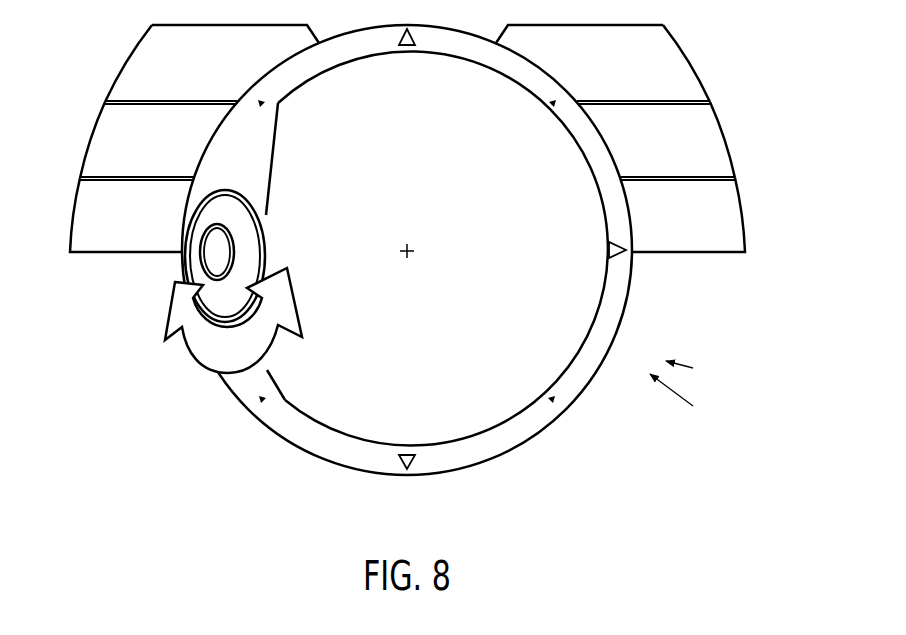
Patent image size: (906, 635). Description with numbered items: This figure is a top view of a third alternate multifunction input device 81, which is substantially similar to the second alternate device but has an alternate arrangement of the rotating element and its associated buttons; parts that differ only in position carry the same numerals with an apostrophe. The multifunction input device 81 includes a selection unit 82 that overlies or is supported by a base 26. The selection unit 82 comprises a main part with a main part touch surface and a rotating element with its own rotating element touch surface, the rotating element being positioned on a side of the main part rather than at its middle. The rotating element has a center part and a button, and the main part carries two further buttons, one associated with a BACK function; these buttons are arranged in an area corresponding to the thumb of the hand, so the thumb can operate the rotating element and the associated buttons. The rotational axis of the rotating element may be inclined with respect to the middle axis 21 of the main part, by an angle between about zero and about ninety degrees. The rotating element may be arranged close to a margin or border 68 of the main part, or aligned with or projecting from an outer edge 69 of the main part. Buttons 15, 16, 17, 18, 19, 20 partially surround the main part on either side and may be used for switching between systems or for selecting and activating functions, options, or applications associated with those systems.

The button 15 is at (146, 52).
The button 16 is at (105, 128).
The button 17 is at (85, 230).
The button 18 is at (730, 230).
The button 19 is at (710, 128).
The button 20 is at (668, 53).
The middle axis 21 is at (401, 246).
The base 26 is at (505, 528).
The margin or border 68 is at (305, 458).
The outer edge 69 is at (351, 475).
The multifunction input device 81 is at (694, 372).
The selection unit 82 is at (686, 401).